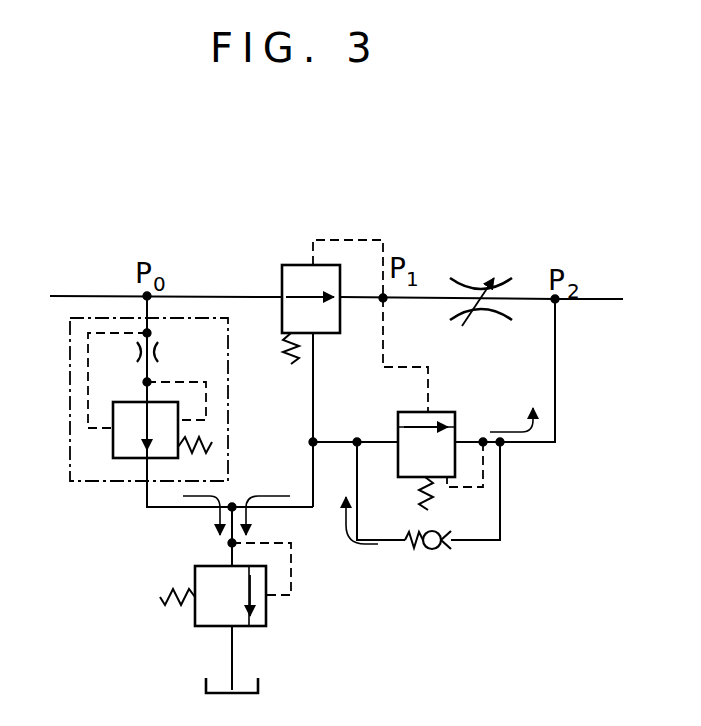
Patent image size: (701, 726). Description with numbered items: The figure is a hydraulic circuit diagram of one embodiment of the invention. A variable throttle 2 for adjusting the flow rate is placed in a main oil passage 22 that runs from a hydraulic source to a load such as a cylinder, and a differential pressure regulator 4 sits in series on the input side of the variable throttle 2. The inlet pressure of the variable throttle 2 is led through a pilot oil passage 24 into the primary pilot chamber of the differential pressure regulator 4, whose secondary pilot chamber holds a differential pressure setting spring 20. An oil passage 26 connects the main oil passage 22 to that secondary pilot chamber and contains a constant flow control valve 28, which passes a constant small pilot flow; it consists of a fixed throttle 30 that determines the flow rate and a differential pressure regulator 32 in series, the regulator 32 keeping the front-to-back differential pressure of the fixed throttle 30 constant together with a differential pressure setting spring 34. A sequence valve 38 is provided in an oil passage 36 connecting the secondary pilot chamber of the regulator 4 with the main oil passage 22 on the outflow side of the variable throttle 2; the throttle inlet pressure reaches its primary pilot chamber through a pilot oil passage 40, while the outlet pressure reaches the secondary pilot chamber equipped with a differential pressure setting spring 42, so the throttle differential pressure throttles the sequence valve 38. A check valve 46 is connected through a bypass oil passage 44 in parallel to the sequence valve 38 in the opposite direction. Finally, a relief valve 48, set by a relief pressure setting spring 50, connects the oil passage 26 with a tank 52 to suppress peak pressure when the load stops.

The variable throttle 2 is at (483, 289).
The differential pressure regulator 4 is at (290, 265).
The differential pressure setting spring 20 is at (290, 346).
The main oil passage 22 is at (112, 296).
The pilot oil passage 24 is at (352, 243).
The oil passage 26 is at (170, 508).
The constant flow control valve 28 is at (68, 370).
The fixed throttle 30 is at (160, 352).
The differential pressure regulator 32 is at (113, 450).
The differential pressure setting spring 34 is at (209, 450).
The oil passage 36 is at (555, 396).
The sequence valve 38 is at (448, 412).
The pilot oil passage 40 is at (386, 343).
The differential pressure setting spring 42 is at (418, 503).
The bypass oil passage 44 is at (500, 504).
The check valve 46 is at (430, 551).
The relief valve 48 is at (266, 617).
The relief pressure setting spring 50 is at (166, 604).
The tank 52 is at (258, 680).